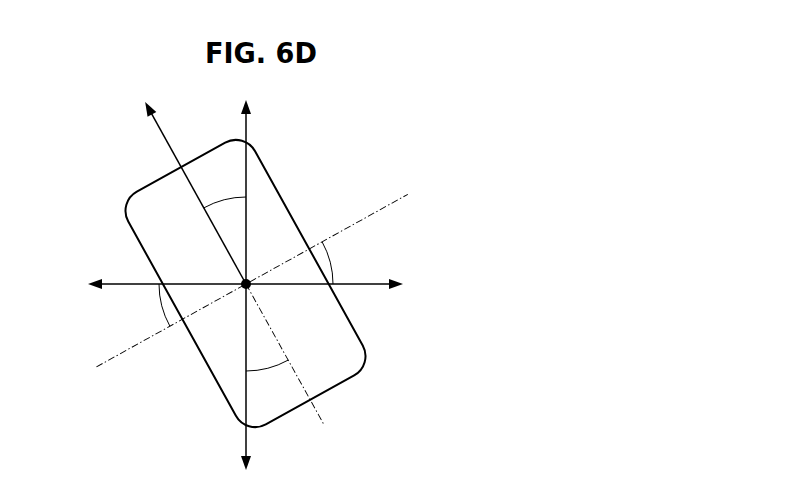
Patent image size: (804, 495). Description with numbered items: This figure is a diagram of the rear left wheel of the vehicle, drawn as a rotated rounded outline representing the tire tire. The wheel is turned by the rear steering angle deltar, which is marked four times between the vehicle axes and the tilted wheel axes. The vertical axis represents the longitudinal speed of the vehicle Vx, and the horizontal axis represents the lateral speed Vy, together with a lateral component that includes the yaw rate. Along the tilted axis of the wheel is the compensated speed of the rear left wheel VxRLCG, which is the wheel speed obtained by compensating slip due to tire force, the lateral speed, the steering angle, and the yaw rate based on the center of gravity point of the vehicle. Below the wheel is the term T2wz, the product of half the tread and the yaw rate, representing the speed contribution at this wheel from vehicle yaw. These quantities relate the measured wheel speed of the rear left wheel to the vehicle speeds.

The rear left tire outline tire is at (246, 283).
The longitudinal speed of the vehicle Vx is at (263, 283).
The lateral speed Vy is at (259, 282).
The compensated speed of the rear left wheel VxRLCG is at (243, 253).
The rear steering angle deltar is at (244, 286).
The yaw-rate tread term (T/2)omega_z T2wz is at (193, 462).